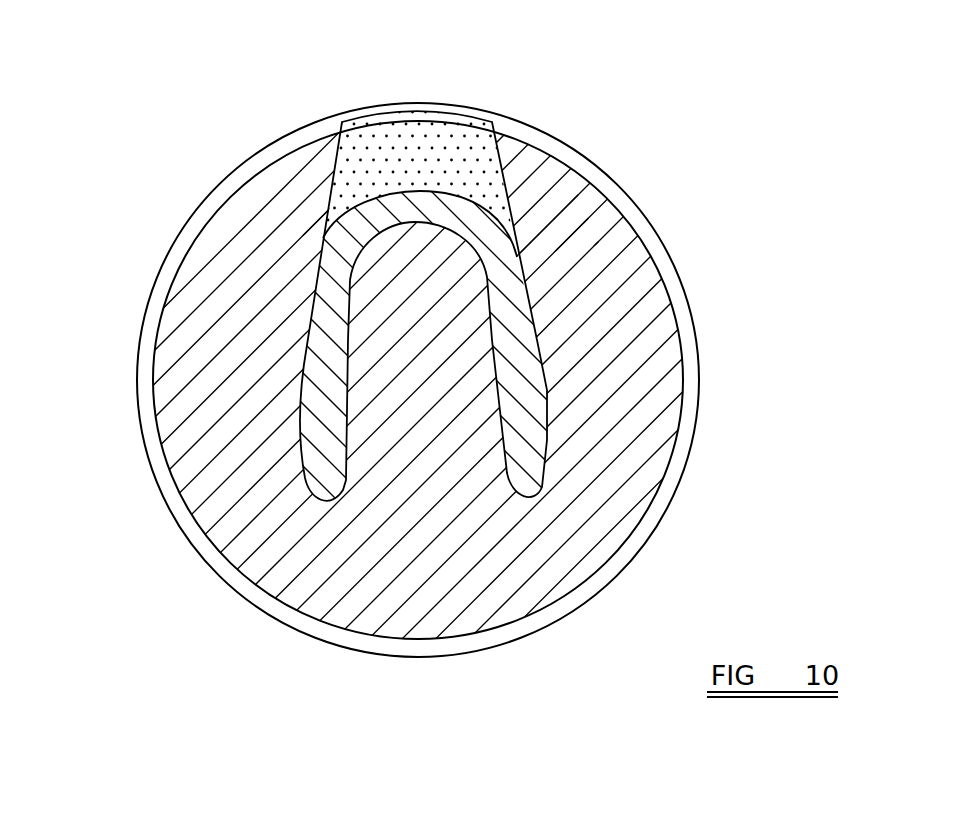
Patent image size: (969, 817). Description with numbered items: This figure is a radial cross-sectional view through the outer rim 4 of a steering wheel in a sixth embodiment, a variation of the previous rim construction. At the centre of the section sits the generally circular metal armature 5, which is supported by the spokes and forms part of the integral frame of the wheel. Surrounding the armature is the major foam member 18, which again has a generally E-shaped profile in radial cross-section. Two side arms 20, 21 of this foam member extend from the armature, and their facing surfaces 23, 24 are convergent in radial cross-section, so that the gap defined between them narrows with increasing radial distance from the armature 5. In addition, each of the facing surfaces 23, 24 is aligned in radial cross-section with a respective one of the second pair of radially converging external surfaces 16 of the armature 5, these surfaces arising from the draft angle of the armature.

The outer rim 4 is at (484, 339).
The armature 5 is at (621, 216).
The radially converging external surfaces 16 is at (313, 318).
The major foam member 18 is at (660, 397).
The side arm 20 is at (517, 173).
The side arm 21 is at (313, 185).
The facing surface 23 is at (490, 162).
The facing surface 24 is at (345, 167).